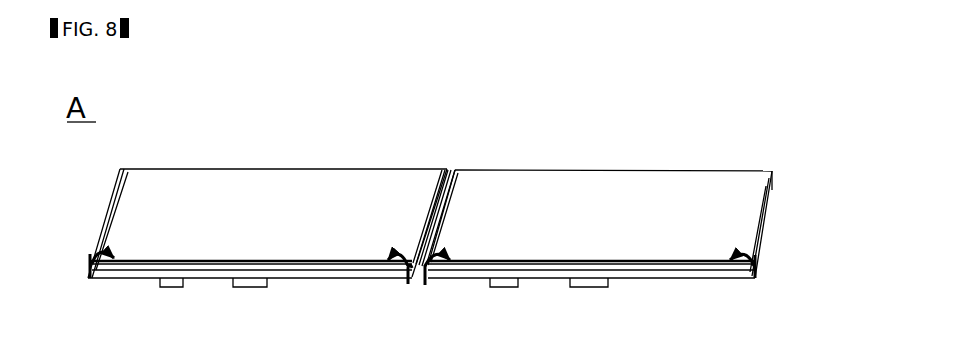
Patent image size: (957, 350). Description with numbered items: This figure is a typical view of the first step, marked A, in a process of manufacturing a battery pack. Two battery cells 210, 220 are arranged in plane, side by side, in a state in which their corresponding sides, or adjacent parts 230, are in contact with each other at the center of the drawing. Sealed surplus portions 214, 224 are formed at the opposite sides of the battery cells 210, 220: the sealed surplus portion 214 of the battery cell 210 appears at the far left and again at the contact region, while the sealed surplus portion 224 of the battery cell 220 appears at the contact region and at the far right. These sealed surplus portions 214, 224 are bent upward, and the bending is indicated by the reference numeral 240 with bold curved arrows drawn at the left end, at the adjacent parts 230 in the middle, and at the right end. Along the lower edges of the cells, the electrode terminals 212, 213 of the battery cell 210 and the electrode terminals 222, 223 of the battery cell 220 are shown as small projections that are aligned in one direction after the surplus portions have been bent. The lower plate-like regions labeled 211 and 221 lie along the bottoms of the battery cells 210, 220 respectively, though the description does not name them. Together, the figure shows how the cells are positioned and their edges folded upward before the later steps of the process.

The battery cell 210 is at (236, 186).
The battery cell 220 is at (576, 186).
The corresponding sides (adjacent parts) 230 is at (448, 170).
The sealed surplus portion 214 is at (106, 206).
The sealed surplus portion 224 is at (450, 208).
The bottom plate of first panel 211 is at (310, 271).
The bottom plate of second panel 221 is at (665, 272).
The electrode terminal 212 is at (168, 284).
The electrode terminal 213 is at (246, 284).
The electrode terminal 222 is at (500, 284).
The electrode terminal 223 is at (585, 284).
The bending 240 is at (88, 281).